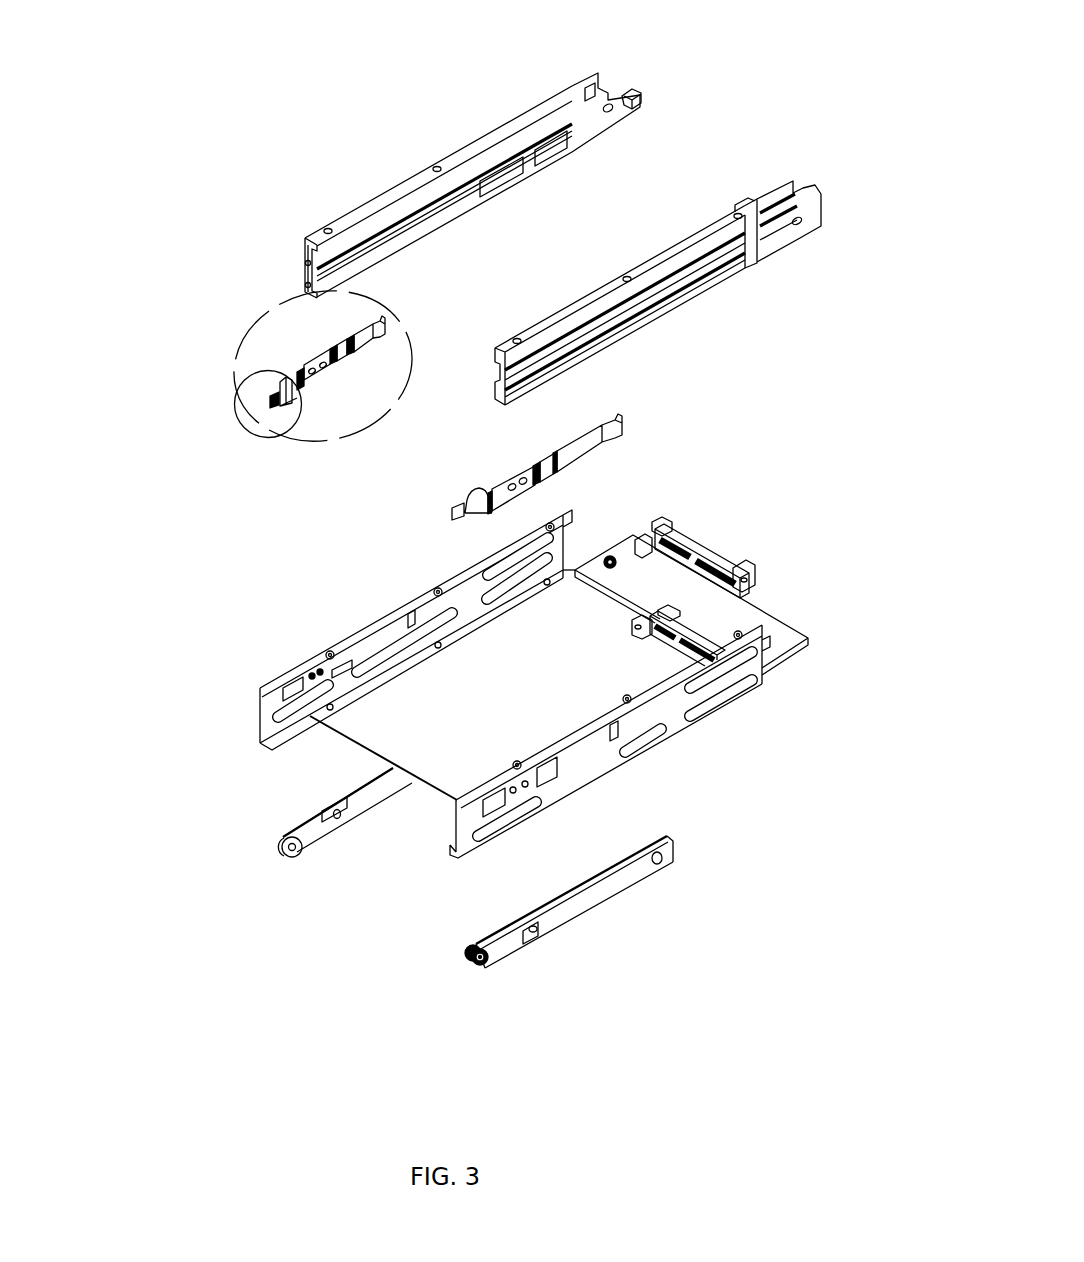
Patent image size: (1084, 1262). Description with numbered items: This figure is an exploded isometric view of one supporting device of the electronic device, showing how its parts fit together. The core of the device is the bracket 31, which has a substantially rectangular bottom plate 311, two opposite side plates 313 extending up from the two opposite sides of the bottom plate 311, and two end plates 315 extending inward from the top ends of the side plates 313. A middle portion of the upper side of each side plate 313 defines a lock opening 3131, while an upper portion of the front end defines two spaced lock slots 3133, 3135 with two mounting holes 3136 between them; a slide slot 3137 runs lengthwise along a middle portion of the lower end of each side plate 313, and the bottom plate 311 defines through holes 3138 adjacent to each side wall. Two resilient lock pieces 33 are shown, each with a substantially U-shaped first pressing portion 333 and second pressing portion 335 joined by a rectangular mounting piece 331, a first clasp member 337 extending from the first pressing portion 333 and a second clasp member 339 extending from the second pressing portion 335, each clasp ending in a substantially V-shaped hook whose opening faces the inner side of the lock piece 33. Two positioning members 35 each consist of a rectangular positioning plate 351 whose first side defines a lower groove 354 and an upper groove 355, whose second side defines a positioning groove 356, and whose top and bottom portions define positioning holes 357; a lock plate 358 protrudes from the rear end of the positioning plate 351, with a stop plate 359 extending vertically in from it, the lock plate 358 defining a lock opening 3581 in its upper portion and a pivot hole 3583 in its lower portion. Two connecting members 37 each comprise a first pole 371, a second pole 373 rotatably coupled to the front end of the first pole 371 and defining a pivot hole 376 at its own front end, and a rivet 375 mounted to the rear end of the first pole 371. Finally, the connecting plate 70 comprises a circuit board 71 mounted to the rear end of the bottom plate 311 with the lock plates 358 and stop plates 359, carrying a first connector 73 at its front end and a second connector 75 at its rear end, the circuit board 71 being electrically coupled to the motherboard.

The positioning member 35 is at (372, 81).
The positioning plate 351 is at (472, 165).
The groove 354 is at (306, 282).
The groove 355 is at (306, 258).
The positioning groove 356 is at (440, 207).
The positioning holes 357 is at (437, 167).
The lock plate 358 is at (577, 107).
The lock opening 3581 is at (592, 75).
The pivot hole 3583 is at (615, 110).
The stop plate 359 is at (633, 95).
The resilient lock piece 33 is at (234, 415).
The mounting piece 331 is at (310, 370).
The first pressing portion 333 is at (307, 358).
The second pressing portion 335 is at (287, 380).
The first clasp member 337 is at (375, 336).
The second clasp member 339 is at (285, 403).
The connecting plate 70 is at (752, 505).
The circuit board 71 is at (773, 632).
The first connector 73 is at (687, 630).
The second connector 75 is at (682, 550).
The bracket 31 is at (833, 702).
The bottom plate 311 is at (665, 660).
The side plate 313 is at (670, 718).
The end plate 315 is at (686, 675).
The lock opening 3131 is at (615, 737).
The lock slot 3133 is at (493, 817).
The lock slot 3135 is at (547, 777).
The mounting holes 3136 is at (525, 785).
The slide slot 3137 is at (652, 728).
The through holes 3138 is at (313, 675).
The connecting member 37 is at (683, 932).
The first pole 371 is at (575, 905).
The second pole 373 is at (505, 942).
The rivet 375 is at (658, 863).
The pivot hole 376 is at (482, 967).